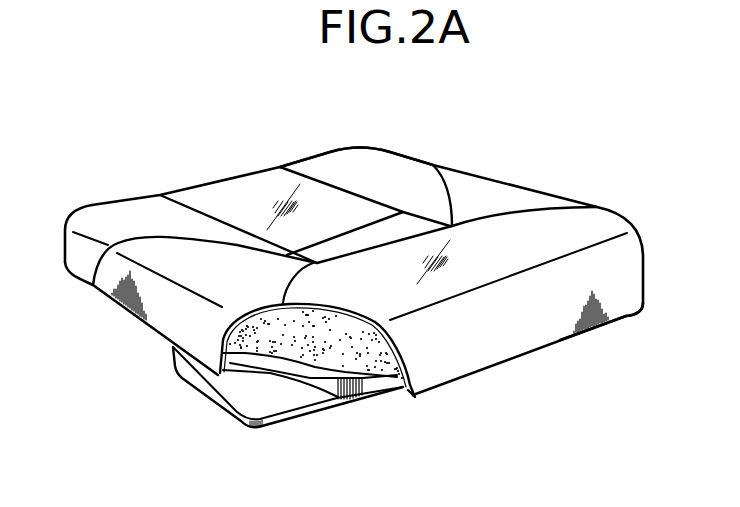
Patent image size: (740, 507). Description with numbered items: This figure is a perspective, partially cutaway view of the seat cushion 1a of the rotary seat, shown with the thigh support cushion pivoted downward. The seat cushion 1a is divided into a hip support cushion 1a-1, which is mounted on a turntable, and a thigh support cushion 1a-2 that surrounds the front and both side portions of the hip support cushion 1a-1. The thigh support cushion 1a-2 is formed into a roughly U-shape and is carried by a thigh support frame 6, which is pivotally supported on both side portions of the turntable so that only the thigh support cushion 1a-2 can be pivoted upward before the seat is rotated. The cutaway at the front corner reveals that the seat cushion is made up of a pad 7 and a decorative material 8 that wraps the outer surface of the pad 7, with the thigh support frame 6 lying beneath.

The seat cushion 1a is at (503, 170).
The hip support cushion 1a-1 is at (400, 167).
The thigh support cushion 1a-2 is at (563, 330).
The thigh support frame 6 is at (370, 390).
The pad 7 is at (274, 346).
The decorative material 8 is at (393, 336).